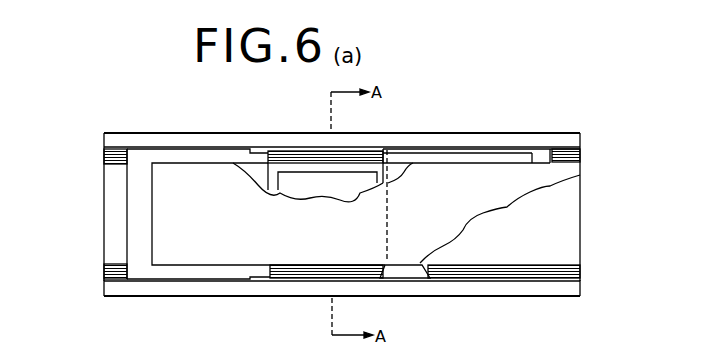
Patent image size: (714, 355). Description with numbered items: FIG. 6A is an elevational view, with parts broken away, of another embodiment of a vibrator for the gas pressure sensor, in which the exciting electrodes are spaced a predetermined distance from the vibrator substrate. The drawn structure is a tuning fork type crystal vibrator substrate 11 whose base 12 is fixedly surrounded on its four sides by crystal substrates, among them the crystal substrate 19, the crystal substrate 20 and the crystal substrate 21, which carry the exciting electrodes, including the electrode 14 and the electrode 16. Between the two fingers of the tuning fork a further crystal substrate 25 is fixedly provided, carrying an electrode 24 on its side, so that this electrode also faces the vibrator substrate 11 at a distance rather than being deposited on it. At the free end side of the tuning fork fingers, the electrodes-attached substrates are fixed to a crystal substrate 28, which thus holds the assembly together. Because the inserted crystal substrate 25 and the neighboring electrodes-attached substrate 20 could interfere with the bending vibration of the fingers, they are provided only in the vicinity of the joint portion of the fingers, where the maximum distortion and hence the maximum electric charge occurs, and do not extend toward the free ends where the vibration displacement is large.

The tuning fork type crystal vibrator substrate 11 is at (419, 200).
The base 12 is at (580, 175).
The electrode 14 is at (513, 148).
The electrode 16 is at (416, 280).
The crystal substrate 19 is at (573, 140).
The crystal substrate 20 is at (563, 250).
The crystal substrate 21 is at (573, 285).
The electrode 24 is at (317, 185).
The crystal substrate 25 is at (367, 147).
The crystal substrate 28 is at (110, 214).